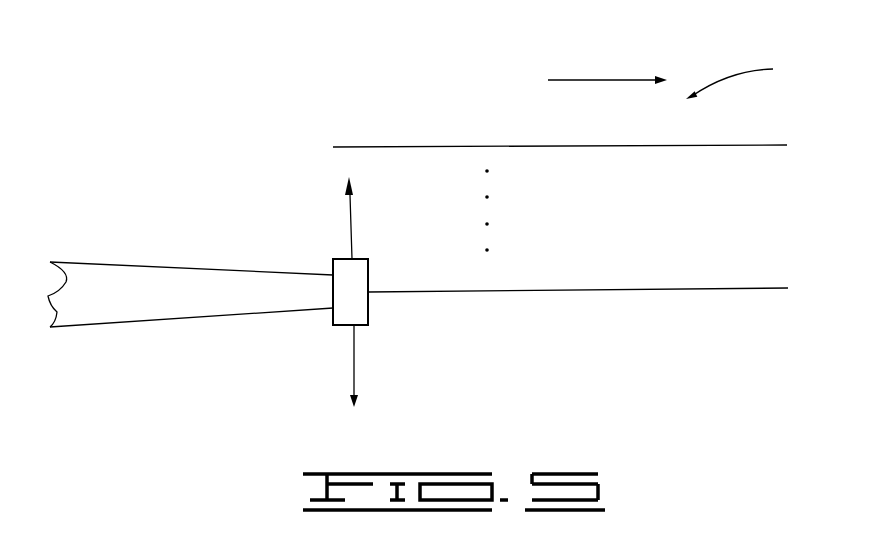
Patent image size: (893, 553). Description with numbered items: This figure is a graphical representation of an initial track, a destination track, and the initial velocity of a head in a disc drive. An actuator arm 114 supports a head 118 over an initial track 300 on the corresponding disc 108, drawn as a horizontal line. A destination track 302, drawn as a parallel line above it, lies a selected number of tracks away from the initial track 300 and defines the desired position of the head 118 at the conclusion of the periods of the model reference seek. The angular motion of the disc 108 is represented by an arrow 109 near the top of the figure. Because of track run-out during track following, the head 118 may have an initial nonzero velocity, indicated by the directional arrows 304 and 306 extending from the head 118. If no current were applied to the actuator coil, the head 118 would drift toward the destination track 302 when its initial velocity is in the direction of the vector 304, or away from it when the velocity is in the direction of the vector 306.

The disc 108 is at (751, 78).
The arrow 109 is at (592, 80).
The actuator arm 114 is at (148, 318).
The head 118 is at (342, 310).
The initial track x(0) 300 is at (697, 288).
The destination track x(N) 302 is at (693, 146).
The directional arrow 304 is at (348, 220).
The directional arrow 306 is at (355, 358).